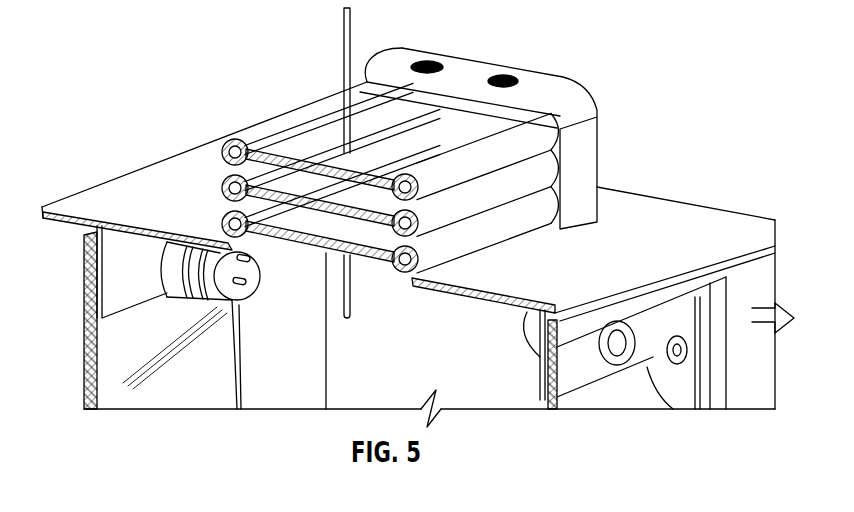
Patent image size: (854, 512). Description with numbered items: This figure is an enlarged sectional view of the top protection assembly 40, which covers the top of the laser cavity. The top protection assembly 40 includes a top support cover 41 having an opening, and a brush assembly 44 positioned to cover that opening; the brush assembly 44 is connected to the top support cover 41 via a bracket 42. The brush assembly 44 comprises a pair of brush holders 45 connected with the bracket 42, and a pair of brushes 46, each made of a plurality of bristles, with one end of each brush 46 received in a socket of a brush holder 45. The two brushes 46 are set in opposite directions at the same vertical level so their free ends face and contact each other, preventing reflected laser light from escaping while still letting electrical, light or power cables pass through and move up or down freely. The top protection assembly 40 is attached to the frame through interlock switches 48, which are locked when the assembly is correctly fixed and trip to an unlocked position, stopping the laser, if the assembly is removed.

The top protection assembly 40 is at (642, 46).
The top support cover 41 is at (97, 192).
The bracket 42 is at (600, 149).
The brush assembly 44 is at (268, 127).
The brush holder 45 is at (437, 253).
The brush 46 is at (367, 153).
The interlock switch 48 is at (113, 302).